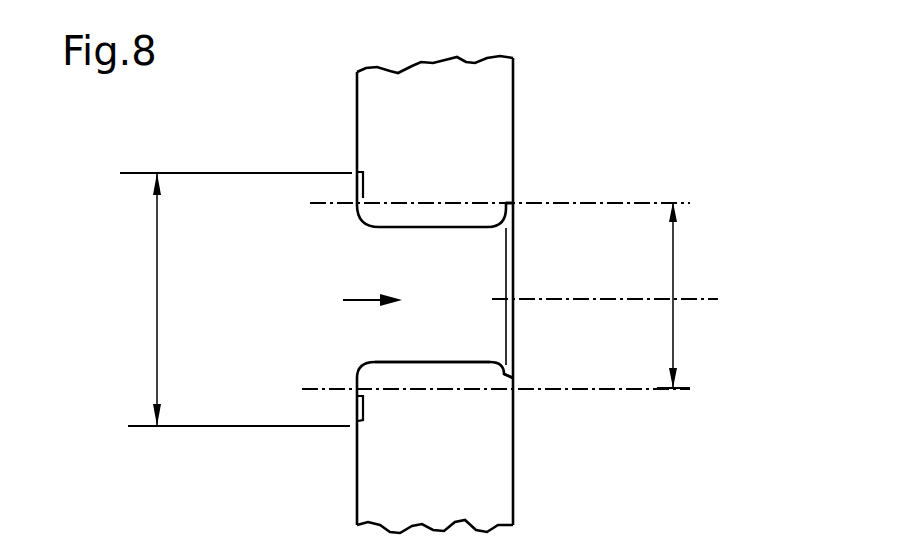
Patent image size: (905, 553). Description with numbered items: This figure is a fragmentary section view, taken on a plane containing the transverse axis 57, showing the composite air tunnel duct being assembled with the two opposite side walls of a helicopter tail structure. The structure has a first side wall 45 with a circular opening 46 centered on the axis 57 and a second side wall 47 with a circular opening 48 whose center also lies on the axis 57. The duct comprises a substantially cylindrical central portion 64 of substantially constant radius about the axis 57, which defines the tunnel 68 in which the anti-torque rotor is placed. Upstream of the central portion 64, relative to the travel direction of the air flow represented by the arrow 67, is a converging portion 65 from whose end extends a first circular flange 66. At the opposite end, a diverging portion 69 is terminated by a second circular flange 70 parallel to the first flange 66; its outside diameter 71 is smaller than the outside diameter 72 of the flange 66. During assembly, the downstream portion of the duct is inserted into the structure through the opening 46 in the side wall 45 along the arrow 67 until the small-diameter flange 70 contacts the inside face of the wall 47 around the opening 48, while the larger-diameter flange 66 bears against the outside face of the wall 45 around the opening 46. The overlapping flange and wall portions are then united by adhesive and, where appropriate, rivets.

The first side wall 45 is at (357, 110).
The circular opening 46 is at (368, 198).
The second side wall 47 is at (516, 78).
The circular opening 48 is at (517, 213).
The transverse axis 57 is at (597, 296).
The central portion 64 is at (462, 365).
The converging portion 65 is at (366, 364).
The first circular flange 66 is at (356, 396).
The arrow 67 is at (345, 298).
The tunnel 68 is at (430, 346).
The diverging portion 69 is at (497, 229).
The second circular flange 70 is at (520, 373).
The outside diameter 71 is at (677, 265).
The outside diameter 72 is at (157, 313).